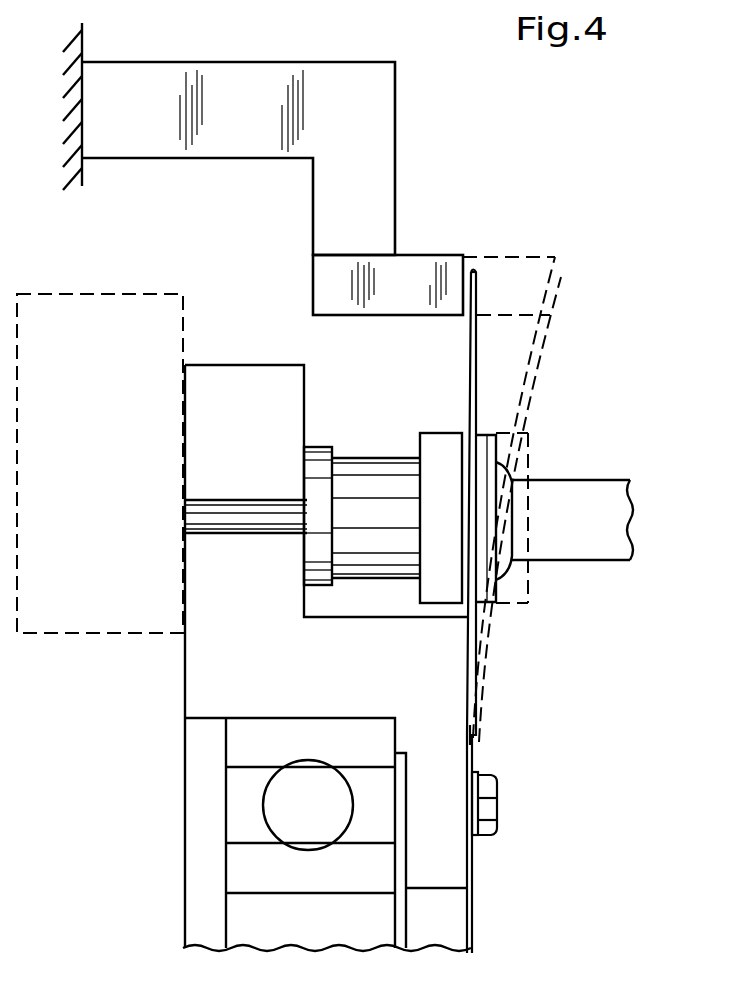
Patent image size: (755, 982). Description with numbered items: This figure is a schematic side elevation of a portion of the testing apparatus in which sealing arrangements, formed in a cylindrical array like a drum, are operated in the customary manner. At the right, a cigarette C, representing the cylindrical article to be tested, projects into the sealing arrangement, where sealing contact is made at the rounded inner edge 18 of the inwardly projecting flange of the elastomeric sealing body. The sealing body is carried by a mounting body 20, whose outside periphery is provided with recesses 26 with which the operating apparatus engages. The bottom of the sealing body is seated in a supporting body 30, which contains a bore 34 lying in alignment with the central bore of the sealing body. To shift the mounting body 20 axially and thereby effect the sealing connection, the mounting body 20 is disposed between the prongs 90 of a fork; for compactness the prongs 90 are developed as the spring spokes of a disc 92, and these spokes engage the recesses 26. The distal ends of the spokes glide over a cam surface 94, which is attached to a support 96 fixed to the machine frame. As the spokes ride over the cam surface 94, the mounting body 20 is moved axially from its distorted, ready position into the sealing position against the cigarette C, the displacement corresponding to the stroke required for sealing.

The support 96 is at (349, 130).
The cam surface 94 is at (433, 268).
The prongs of a fork 90 is at (478, 270).
The disc 92 is at (478, 736).
The mounting body 20 is at (438, 446).
The recesses 26 is at (484, 443).
The rounded inner edge 18 is at (513, 506).
The supporting body 30 is at (364, 475).
The bore 34 is at (258, 526).
The cigarette C is at (614, 492).